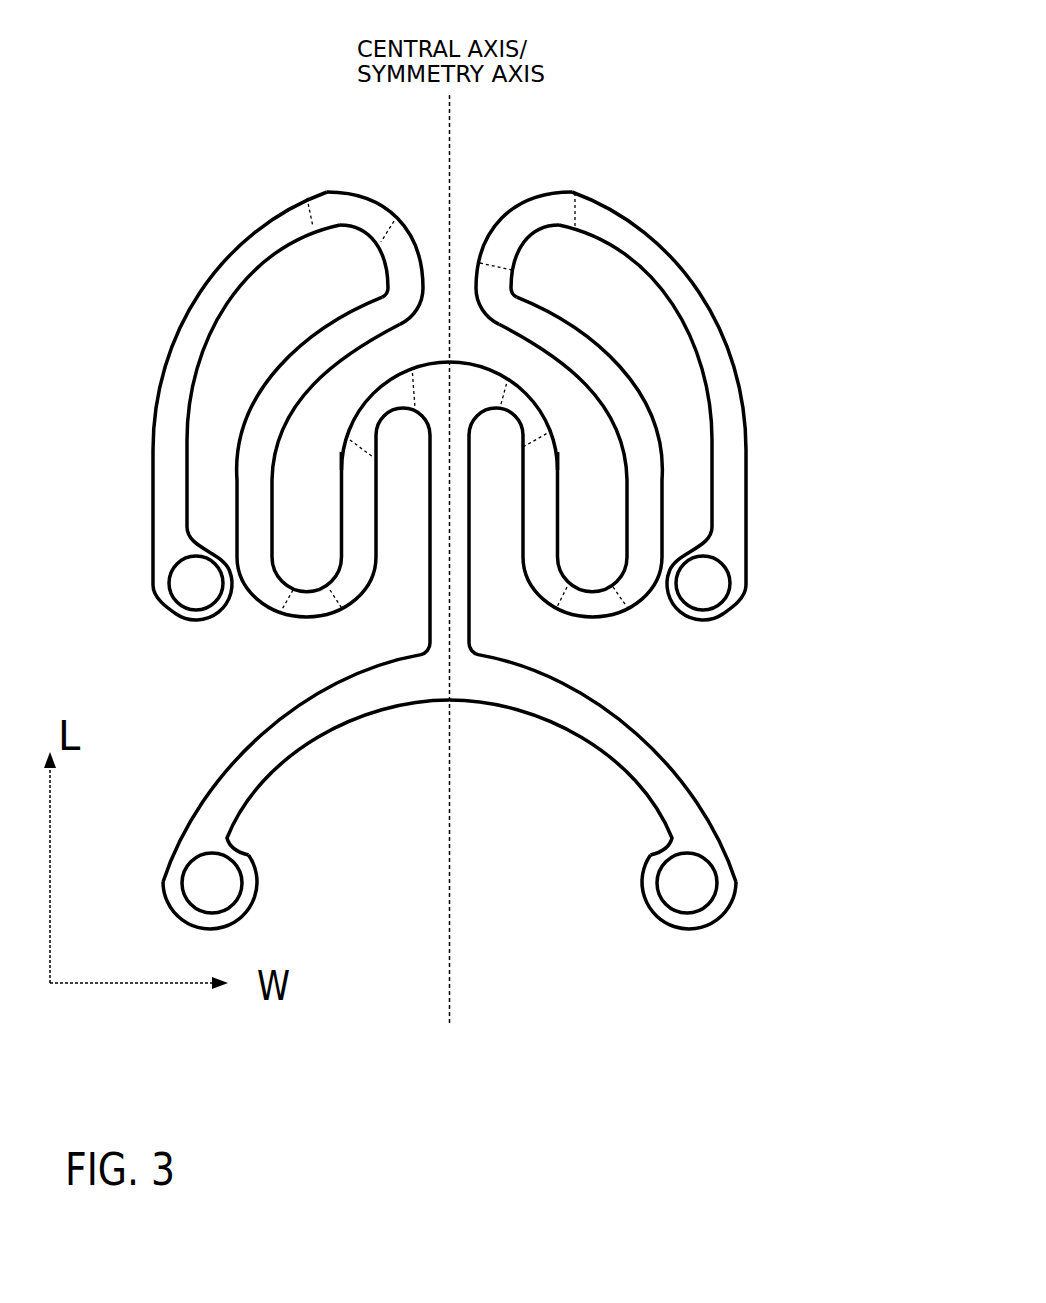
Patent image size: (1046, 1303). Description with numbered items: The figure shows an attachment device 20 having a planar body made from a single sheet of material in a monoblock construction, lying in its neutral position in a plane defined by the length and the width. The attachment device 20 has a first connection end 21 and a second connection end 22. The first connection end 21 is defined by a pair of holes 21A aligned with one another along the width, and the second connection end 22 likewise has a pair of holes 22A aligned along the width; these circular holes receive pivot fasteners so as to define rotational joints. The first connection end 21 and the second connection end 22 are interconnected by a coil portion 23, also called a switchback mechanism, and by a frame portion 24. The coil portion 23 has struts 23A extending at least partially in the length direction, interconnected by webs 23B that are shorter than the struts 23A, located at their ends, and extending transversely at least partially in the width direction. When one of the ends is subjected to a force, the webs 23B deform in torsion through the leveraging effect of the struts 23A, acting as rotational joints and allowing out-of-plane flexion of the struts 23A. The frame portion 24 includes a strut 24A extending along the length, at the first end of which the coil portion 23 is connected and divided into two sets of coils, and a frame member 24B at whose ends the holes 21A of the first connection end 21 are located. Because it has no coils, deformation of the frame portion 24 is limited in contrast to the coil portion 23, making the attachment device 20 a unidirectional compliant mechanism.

The attachment device 20 is at (128, 183).
The first connection end 21 is at (712, 955).
The holes 21A is at (197, 913).
The second connection end 22 is at (781, 591).
The holes 22A is at (152, 452).
The coil portion 23 is at (781, 453).
The struts 23A is at (658, 273).
The webs 23B is at (510, 230).
The frame portion 24 is at (747, 792).
The strut 24A is at (462, 590).
The frame member 24B is at (567, 707).